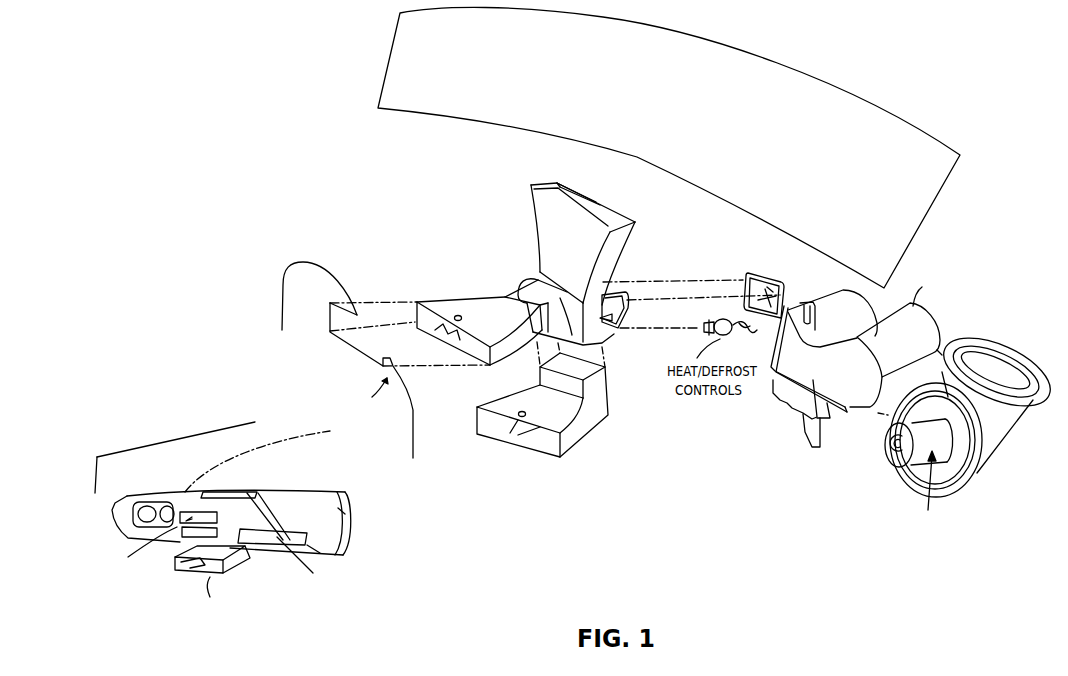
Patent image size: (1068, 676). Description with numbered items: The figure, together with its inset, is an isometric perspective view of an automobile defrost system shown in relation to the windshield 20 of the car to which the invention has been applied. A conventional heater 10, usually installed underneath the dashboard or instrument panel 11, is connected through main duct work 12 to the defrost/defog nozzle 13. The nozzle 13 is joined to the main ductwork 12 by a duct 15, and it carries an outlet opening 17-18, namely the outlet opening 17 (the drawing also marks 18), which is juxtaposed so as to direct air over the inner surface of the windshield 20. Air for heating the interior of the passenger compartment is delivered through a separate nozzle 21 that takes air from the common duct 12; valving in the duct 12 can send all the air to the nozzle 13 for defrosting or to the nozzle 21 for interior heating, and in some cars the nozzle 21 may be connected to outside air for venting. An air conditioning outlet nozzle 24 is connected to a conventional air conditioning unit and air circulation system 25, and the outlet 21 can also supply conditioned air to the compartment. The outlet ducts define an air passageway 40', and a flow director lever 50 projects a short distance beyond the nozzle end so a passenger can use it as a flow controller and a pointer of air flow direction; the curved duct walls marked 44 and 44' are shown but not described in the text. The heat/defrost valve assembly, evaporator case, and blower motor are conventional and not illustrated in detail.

The heater 10 is at (771, 416).
The instrument panel 11 is at (305, 328).
The main duct work 12 is at (532, 285).
The defrost/defog nozzle 13 is at (542, 203).
The duct 15 is at (552, 242).
The outlet opening 17-18 is at (590, 195).
The outlet opening 17 is at (576, 192).
The defroster outlet 18 is at (580, 196).
The windshield 20 is at (816, 150).
The nozzle 21 is at (559, 456).
The air conditioning outlet nozzle 24 is at (483, 365).
The air conditioning unit and air circulation system 25 is at (763, 287).
The air passageway 40' is at (519, 362).
The curved duct wall 44 is at (574, 298).
The curved duct wall of heat outlet 44' is at (592, 436).
The flow director lever 50 is at (438, 332).